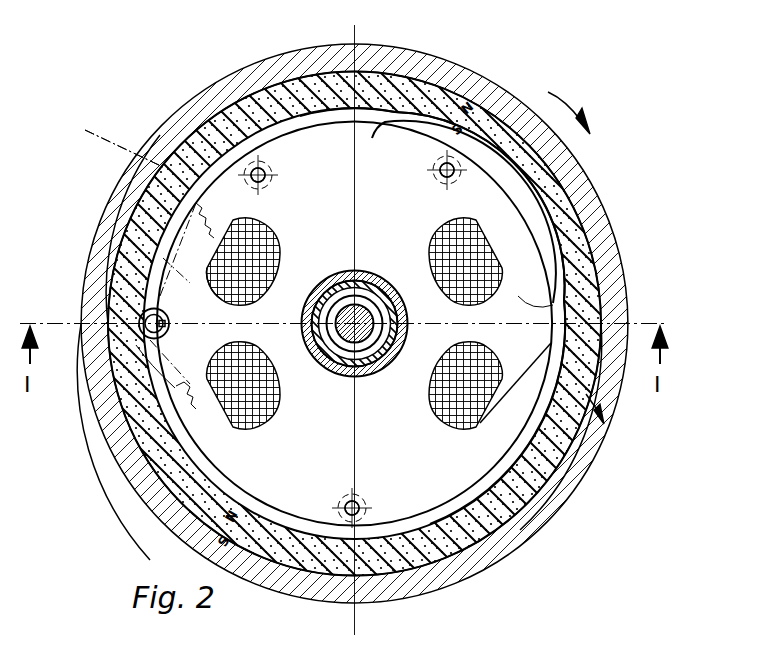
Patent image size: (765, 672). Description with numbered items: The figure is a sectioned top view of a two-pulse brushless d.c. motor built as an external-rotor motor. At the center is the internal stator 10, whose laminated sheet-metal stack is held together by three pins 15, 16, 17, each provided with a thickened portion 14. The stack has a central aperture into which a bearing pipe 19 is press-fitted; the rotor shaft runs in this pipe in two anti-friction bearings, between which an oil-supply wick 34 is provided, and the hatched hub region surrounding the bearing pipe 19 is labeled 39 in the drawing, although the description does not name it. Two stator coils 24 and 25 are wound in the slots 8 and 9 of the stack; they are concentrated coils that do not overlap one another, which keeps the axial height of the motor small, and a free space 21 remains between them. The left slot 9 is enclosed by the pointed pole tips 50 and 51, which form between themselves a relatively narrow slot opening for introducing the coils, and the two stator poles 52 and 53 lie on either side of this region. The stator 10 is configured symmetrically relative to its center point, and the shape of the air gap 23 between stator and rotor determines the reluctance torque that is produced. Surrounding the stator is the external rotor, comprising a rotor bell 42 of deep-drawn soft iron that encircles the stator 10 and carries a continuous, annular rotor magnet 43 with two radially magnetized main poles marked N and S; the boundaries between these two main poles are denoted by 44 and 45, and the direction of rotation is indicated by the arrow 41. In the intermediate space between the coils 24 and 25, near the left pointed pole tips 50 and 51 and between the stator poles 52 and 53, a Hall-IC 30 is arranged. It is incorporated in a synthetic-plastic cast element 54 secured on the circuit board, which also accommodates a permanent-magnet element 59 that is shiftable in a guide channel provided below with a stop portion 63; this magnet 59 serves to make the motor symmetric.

The slot 8 is at (434, 250).
The slot 9 is at (276, 236).
The internal stator 10 is at (360, 248).
The thickened portion 14 is at (268, 166).
The pin 15 is at (365, 512).
The pin 16 is at (438, 183).
The pin 17 is at (268, 184).
The bearing pipe 19 is at (325, 365).
The free space 21 is at (236, 334).
The air gap 23 is at (130, 427).
The stator coil 24 is at (472, 243).
The stator coil 25 is at (472, 400).
The Hall-IC 30 is at (130, 318).
The oil-supply wick 34 is at (395, 368).
The hub ring 39 is at (392, 308).
The rotation direction 41 is at (574, 113).
The rotor bell 42 is at (606, 197).
The rotor magnet 43 is at (585, 272).
The pole boundary 44 is at (127, 152).
The pole boundary 45 is at (594, 488).
The pointed pole tip 50 is at (106, 186).
The pointed pole tip 51 is at (120, 376).
The stator pole 52 is at (417, 86).
The stator pole 53 is at (522, 540).
The cast element 54 is at (168, 317).
The permanent-magnet element 59 is at (168, 329).
The stop portion 63 is at (623, 412).